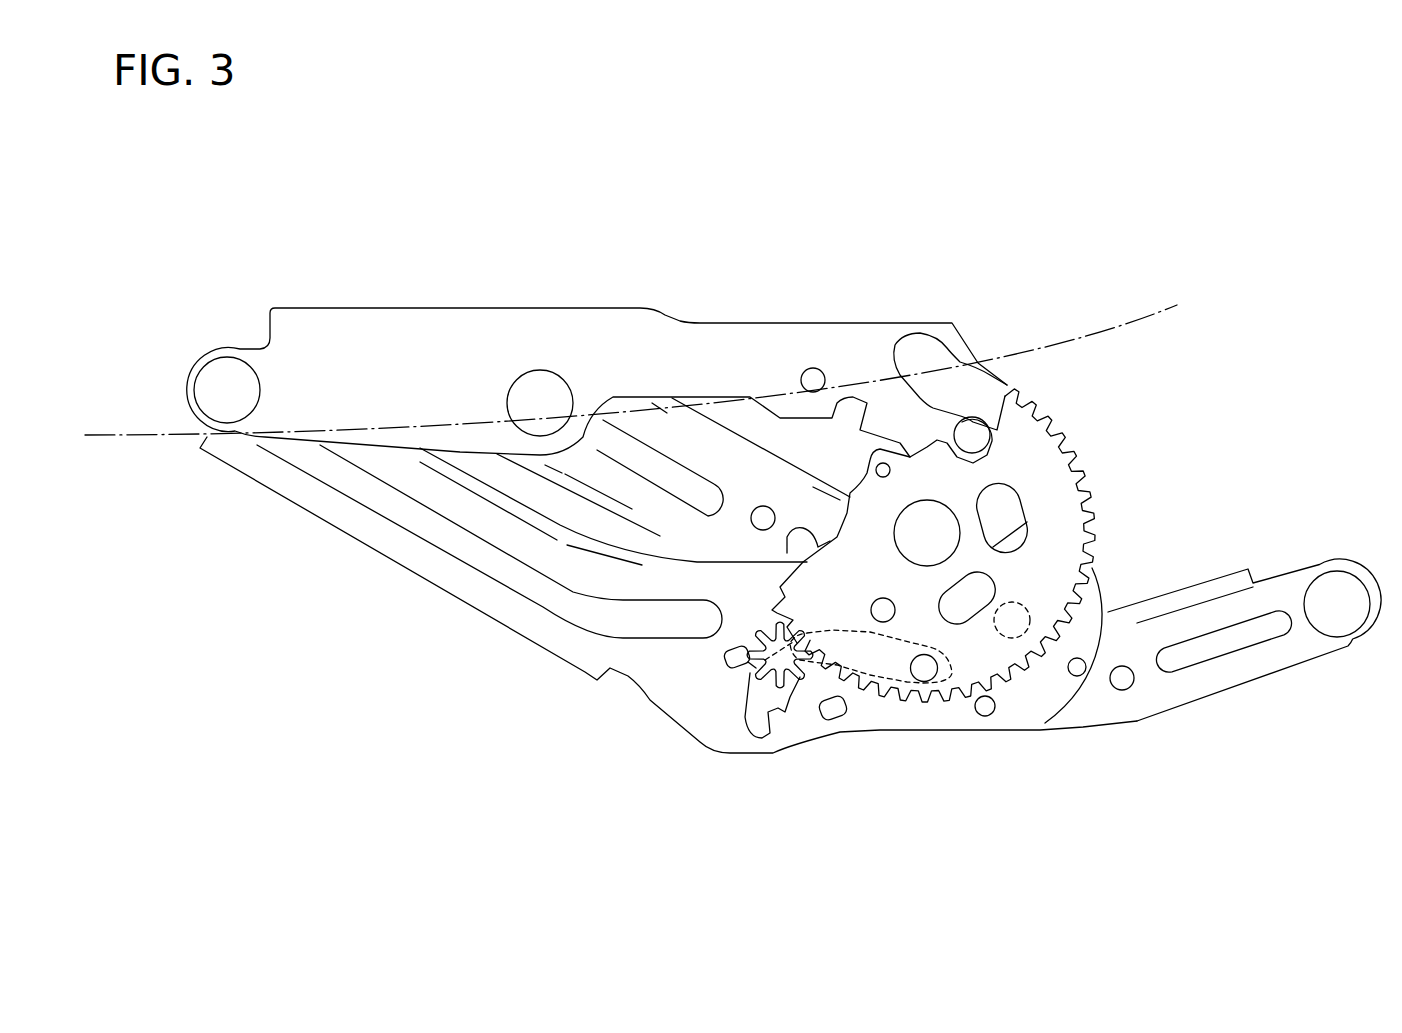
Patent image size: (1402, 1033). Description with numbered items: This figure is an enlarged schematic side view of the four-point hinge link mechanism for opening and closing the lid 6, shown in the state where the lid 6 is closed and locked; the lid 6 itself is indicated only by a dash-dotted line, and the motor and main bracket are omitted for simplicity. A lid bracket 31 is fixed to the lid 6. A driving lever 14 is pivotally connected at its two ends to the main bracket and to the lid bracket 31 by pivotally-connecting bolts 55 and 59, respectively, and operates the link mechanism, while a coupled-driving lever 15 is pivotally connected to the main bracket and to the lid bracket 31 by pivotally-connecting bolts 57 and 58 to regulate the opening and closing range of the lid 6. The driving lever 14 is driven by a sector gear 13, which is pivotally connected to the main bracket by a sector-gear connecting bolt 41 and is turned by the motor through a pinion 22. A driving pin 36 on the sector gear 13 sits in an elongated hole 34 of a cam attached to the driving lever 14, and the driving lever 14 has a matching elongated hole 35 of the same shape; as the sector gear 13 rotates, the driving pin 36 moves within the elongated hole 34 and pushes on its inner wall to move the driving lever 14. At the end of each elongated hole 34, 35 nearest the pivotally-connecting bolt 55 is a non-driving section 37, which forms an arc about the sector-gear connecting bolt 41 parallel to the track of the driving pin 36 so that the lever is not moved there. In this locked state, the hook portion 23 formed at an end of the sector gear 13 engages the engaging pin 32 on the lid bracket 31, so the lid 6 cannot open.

The lid 6 is at (1112, 330).
The sector gear 13 is at (1098, 510).
The driving lever 14 is at (470, 592).
The coupled-driving lever 15 is at (795, 485).
The pinion 22 is at (753, 670).
The hook portion 23 is at (992, 413).
The lid bracket 31 is at (697, 337).
The engaging pin 32 is at (975, 433).
The elongated hole 34 is at (787, 751).
The elongated hole 35 is at (770, 735).
The driving pin 36 is at (927, 673).
The non-driving section 37 is at (902, 640).
The sector-gear connecting bolt 41 is at (907, 542).
The pivotally-connecting bolt 55 is at (1020, 612).
The pivotally-connecting bolt 57 is at (1340, 634).
The pivotally-connecting bolt 58 is at (545, 380).
The pivotally-connecting bolt 59 is at (229, 368).